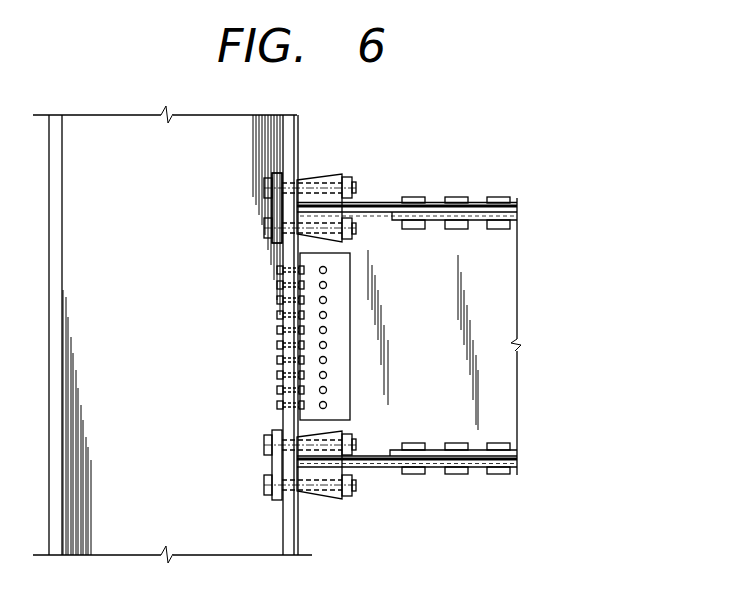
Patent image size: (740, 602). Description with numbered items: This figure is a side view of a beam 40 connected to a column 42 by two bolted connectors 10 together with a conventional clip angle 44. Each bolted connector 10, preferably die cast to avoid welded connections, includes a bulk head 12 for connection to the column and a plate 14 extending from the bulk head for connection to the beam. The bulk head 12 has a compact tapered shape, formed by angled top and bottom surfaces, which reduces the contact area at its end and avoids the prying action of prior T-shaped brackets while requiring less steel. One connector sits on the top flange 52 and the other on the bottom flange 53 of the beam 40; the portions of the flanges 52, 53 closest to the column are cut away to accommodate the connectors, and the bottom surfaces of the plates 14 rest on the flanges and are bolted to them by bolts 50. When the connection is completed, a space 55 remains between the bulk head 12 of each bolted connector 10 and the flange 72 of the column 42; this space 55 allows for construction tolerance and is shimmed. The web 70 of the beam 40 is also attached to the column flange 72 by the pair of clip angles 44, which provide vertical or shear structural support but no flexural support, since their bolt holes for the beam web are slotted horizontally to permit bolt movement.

The bolted connector 10 is at (429, 332).
The bulk head 12 is at (340, 166).
The plate 14 is at (446, 329).
The beam 40 is at (487, 336).
The column 42 is at (182, 377).
The clip angle 44 is at (348, 338).
The bolts 50 is at (493, 198).
The top flange 52 is at (512, 215).
The bottom flange 53 is at (517, 458).
The space 55 is at (298, 180).
The web 70 is at (443, 427).
The flange 72 is at (283, 518).